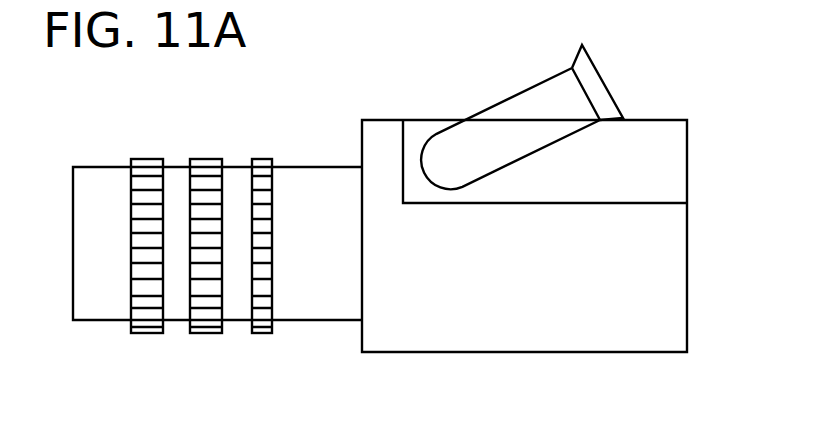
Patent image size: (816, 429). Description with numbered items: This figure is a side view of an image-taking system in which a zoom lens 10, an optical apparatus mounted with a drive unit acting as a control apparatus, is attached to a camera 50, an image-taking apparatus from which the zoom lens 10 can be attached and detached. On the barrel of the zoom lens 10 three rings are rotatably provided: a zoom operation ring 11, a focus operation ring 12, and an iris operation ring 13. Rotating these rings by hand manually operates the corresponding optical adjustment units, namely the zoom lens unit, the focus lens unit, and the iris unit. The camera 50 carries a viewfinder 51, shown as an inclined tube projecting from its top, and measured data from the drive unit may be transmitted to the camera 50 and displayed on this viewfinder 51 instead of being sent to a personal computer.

The zoom lens 10 is at (305, 312).
The zoom operation ring 11 is at (147, 157).
The focus operation ring 12 is at (208, 157).
The iris operation ring 13 is at (263, 157).
The camera 50 is at (522, 340).
The viewfinder 51 is at (497, 110).